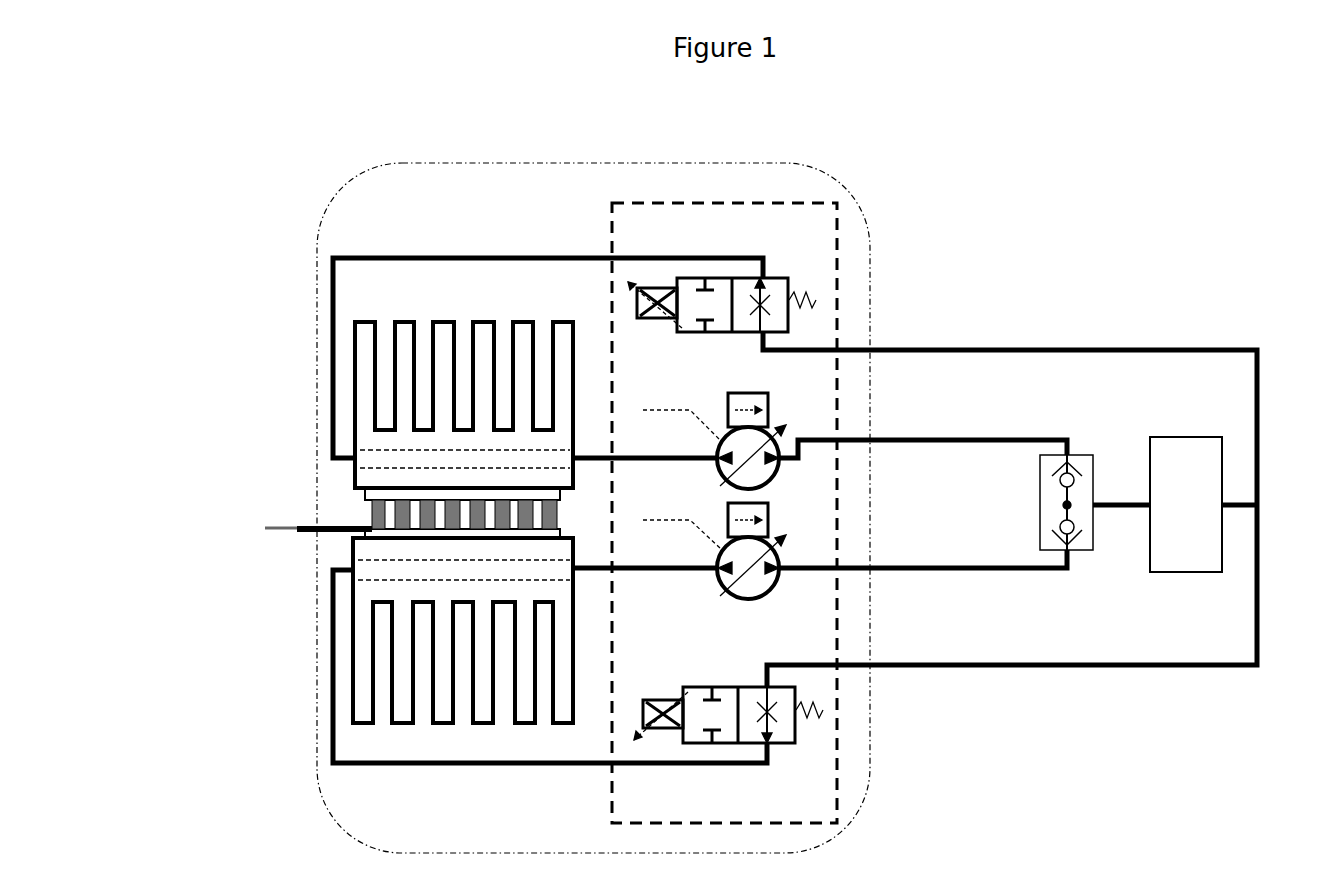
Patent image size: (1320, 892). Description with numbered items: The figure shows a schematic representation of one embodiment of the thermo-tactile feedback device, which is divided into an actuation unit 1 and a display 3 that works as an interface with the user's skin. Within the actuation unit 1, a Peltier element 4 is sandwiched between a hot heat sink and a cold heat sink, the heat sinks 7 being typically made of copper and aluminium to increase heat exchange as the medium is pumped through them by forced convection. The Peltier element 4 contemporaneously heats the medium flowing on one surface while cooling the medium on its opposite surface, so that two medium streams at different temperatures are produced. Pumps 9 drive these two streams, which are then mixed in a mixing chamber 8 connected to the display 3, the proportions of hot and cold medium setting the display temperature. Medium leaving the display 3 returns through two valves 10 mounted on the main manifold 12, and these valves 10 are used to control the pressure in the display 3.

The actuation unit 1 is at (595, 163).
The display 3 is at (1185, 437).
The Peltier element 4 is at (368, 515).
The heat sink 7 is at (357, 362).
The mixing chamber 8 is at (1075, 455).
The pump 9 is at (767, 413).
The valve 10 is at (780, 278).
The main manifold 12 is at (755, 205).